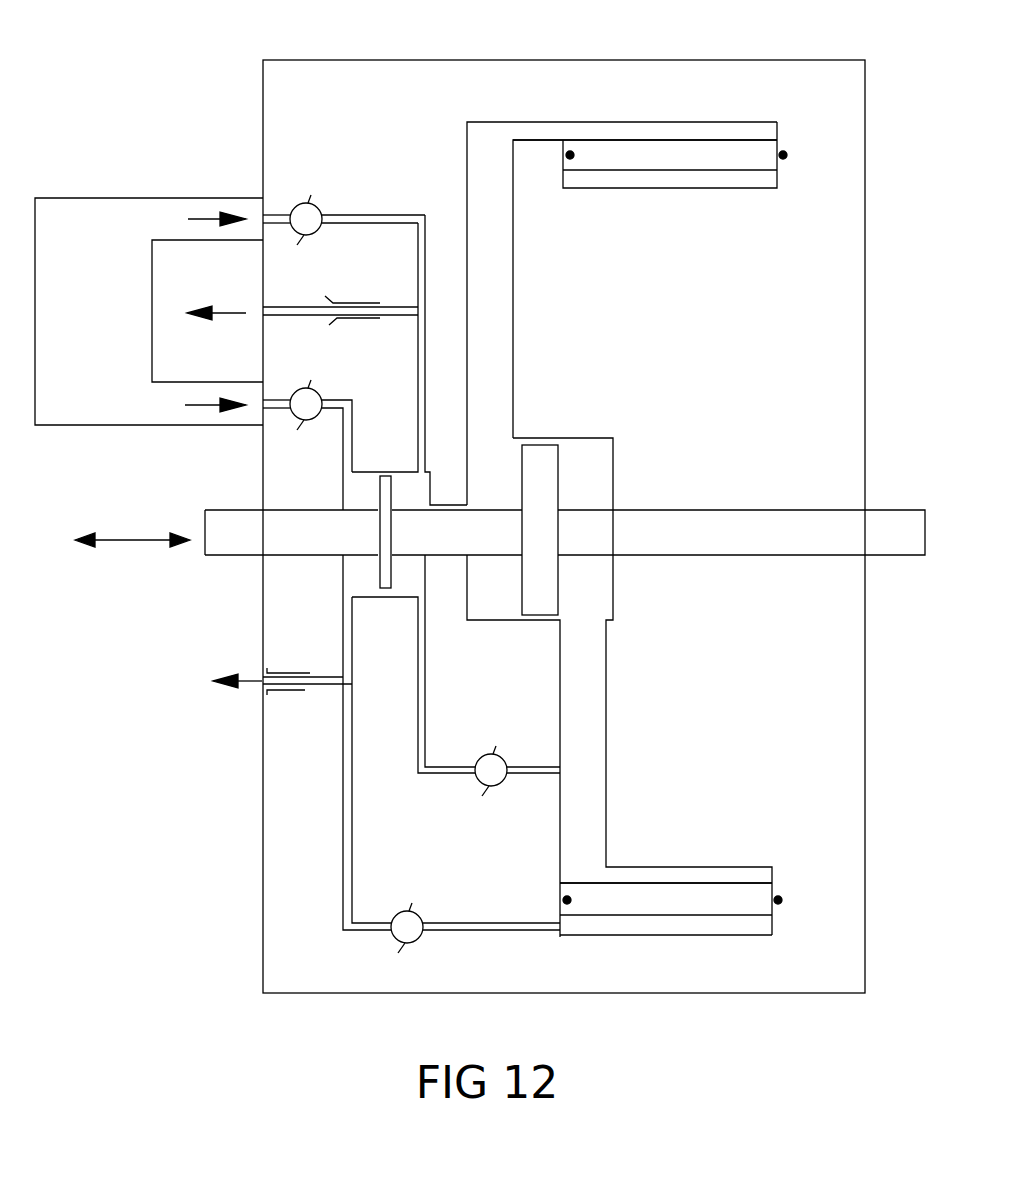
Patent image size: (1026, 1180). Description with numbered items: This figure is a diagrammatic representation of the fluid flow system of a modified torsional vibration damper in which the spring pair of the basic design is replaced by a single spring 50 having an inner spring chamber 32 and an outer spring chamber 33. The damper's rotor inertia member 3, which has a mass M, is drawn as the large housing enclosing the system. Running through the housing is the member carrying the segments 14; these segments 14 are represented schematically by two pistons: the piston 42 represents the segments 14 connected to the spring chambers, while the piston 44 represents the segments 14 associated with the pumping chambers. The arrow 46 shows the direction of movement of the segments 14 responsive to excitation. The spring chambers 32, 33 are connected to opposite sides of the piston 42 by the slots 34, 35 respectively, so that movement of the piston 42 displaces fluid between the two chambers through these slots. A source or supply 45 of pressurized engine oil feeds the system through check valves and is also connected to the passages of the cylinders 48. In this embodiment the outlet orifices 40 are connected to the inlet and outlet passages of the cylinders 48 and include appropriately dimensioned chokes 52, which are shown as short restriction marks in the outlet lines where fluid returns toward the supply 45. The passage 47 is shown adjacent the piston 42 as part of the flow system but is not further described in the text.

The rotor inertia member 3 is at (850, 322).
The segments 14 is at (473, 506).
The inner spring chamber 32 is at (685, 182).
The outer spring chamber 33 is at (636, 124).
The slot 34 is at (612, 718).
The slot 35 is at (518, 352).
The outlet orifices 40 is at (263, 307).
The piston 42 is at (545, 535).
The piston 44 is at (378, 540).
The source or supply 45 is at (130, 198).
The arrow 46 is at (150, 520).
The passage 47 is at (575, 576).
The cylinders 48 is at (410, 573).
The single spring 50 is at (742, 150).
The chokes 52 is at (355, 300).